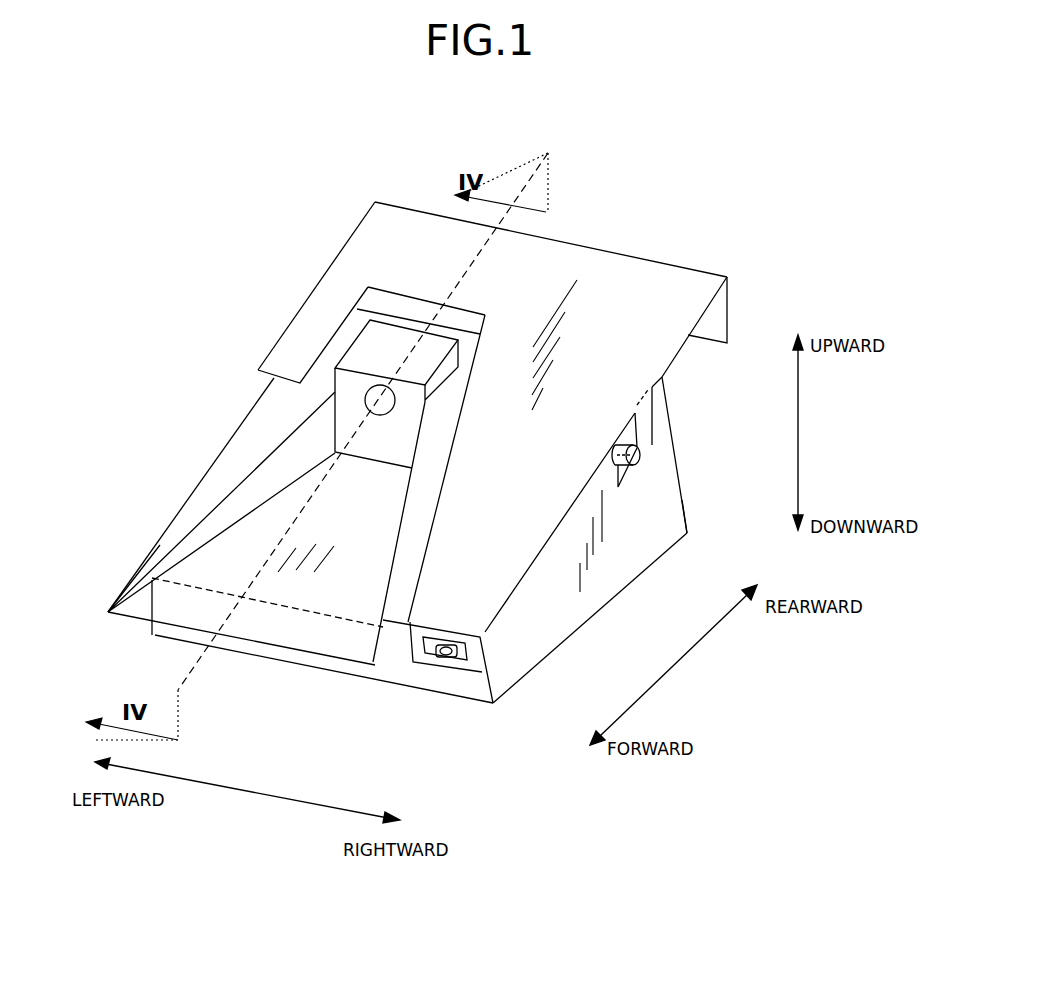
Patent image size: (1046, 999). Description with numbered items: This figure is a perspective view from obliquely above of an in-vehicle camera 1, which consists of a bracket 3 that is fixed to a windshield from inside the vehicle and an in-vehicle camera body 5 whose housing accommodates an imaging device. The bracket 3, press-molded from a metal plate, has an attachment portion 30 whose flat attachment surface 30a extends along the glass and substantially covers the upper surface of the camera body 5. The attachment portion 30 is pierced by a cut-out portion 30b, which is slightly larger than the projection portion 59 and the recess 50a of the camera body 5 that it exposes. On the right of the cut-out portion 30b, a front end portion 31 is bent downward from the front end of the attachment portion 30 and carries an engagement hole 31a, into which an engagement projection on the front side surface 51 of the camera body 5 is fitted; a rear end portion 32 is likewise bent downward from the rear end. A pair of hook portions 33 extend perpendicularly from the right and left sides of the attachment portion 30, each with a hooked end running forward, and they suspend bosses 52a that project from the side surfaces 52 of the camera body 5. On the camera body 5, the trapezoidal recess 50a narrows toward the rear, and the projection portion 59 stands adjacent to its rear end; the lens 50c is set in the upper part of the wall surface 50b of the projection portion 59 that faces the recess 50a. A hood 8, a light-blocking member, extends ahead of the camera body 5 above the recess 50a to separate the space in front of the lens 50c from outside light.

The in-vehicle camera 1 is at (608, 152).
The bracket 3 is at (680, 265).
The in-vehicle camera body 5 is at (690, 522).
The hood 8 is at (140, 587).
The attachment portion 30 is at (606, 262).
The attachment surface 30a is at (606, 262).
The cut-out portion 30b is at (440, 483).
The front end portion 31 is at (477, 652).
The engagement hole 31a is at (455, 660).
The rear end portion 32 is at (733, 300).
The hook portion 33 is at (648, 430).
The recess 50a is at (402, 494).
The wall surface 50b is at (330, 388).
The lens 50c is at (371, 401).
The front side surface 51 is at (295, 645).
The side surface 52 is at (610, 577).
The boss 52a is at (637, 455).
The projection portion 59 is at (380, 336).